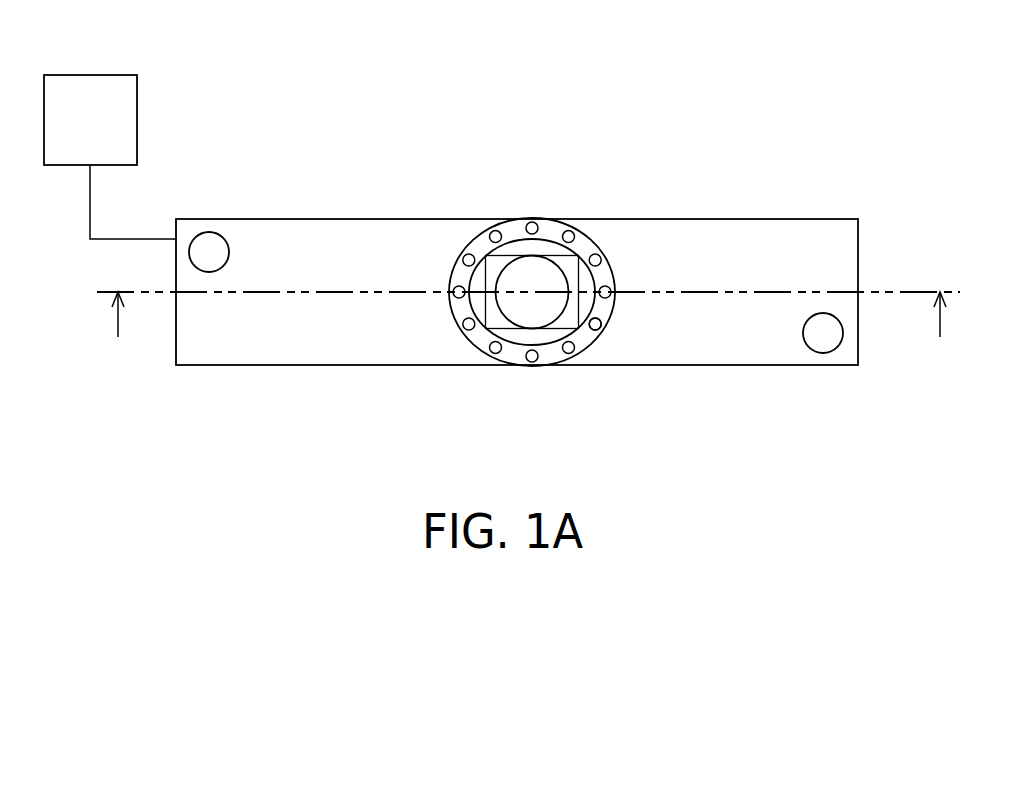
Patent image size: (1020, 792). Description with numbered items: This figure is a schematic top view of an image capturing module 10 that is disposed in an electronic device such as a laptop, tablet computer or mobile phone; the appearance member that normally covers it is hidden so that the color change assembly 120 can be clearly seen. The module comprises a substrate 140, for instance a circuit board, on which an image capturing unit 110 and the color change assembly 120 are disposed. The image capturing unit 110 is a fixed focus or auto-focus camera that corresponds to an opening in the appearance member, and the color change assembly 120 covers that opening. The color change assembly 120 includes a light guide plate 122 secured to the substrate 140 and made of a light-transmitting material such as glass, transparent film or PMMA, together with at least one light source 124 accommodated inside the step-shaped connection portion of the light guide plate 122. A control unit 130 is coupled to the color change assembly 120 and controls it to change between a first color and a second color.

The image capturing module 10 is at (116, 30).
The image capturing unit 110 is at (560, 268).
The color change assembly 120 is at (553, 317).
The light guide plate 122 is at (602, 308).
The light source 124 is at (468, 325).
The control unit 130 is at (110, 157).
The substrate 140 is at (258, 342).